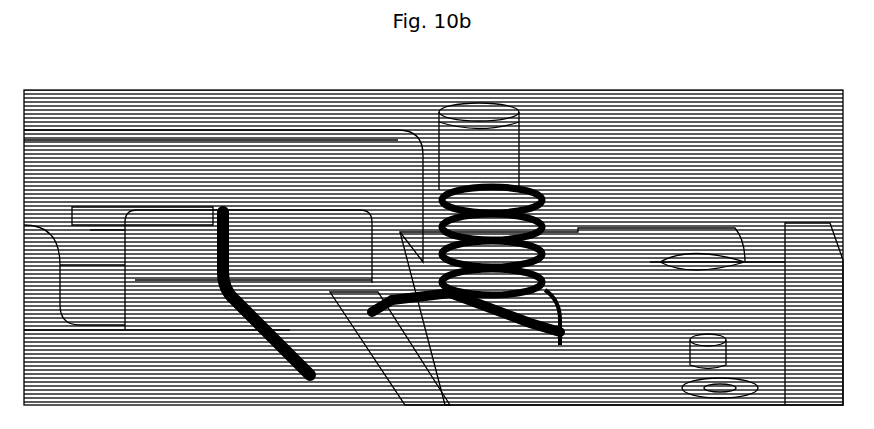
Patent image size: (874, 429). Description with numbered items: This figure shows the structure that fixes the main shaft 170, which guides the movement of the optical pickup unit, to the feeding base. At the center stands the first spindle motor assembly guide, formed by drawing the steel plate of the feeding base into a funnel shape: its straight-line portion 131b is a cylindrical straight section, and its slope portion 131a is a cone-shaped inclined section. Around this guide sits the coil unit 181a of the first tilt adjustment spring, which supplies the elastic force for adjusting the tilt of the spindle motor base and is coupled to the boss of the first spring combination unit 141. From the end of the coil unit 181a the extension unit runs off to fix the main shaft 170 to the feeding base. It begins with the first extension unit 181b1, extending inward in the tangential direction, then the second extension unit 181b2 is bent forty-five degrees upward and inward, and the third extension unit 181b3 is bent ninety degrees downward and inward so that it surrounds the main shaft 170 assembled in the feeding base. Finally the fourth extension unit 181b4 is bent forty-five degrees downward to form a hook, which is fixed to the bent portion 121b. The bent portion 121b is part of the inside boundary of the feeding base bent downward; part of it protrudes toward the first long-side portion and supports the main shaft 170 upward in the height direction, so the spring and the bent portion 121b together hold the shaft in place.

The bent portion 121b is at (177, 242).
The straight-line portion 131b is at (520, 116).
The slope portion 131a is at (560, 220).
The first spring combination unit 141 is at (580, 258).
The main shaft 170 is at (367, 396).
The coil unit 181a is at (560, 296).
The first extension unit 181b1 is at (528, 330).
The second extension unit 181b2 is at (380, 320).
The third extension unit 181b3 is at (262, 340).
The fourth extension unit 181b4 is at (217, 270).